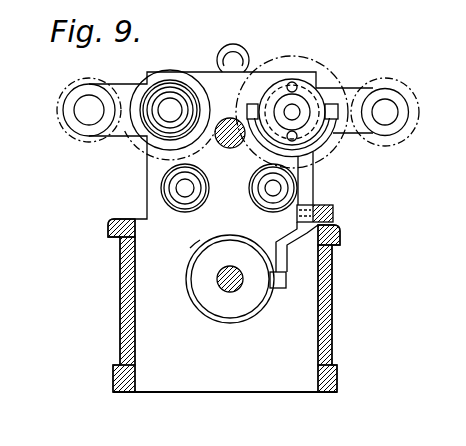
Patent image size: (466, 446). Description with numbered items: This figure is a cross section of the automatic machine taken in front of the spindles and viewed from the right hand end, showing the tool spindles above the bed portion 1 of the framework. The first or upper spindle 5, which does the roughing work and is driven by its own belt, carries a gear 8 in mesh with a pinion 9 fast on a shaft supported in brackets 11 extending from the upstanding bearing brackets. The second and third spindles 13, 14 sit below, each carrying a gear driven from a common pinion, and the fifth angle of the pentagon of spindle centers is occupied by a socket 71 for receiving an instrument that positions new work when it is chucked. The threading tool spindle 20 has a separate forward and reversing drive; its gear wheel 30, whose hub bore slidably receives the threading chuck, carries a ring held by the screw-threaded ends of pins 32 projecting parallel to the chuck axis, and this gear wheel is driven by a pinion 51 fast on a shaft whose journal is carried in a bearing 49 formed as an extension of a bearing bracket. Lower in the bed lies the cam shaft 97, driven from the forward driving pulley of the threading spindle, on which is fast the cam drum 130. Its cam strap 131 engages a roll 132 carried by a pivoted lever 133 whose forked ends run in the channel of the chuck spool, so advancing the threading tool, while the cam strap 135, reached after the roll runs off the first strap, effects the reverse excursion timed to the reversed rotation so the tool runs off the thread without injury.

The bed portion 1 is at (297, 363).
The upper spindle 5 is at (157, 128).
The gear 8 is at (157, 69).
The pinion 9 is at (57, 133).
The brackets 11 is at (85, 130).
The second spindle 13 is at (271, 203).
The third spindle 14 is at (183, 213).
The threading tool spindle 20 is at (310, 100).
The gear wheel 30 is at (230, 148).
The pins 32 is at (294, 84).
The bearing 49 is at (390, 118).
The pinion 51 is at (408, 88).
The socket 71 is at (250, 45).
The cam shaft 97 is at (237, 282).
The cam drum 130 is at (230, 305).
The cam strap 131 is at (196, 298).
The roll 132 is at (272, 290).
The lever 133 is at (293, 242).
The cam strap 135 is at (200, 250).